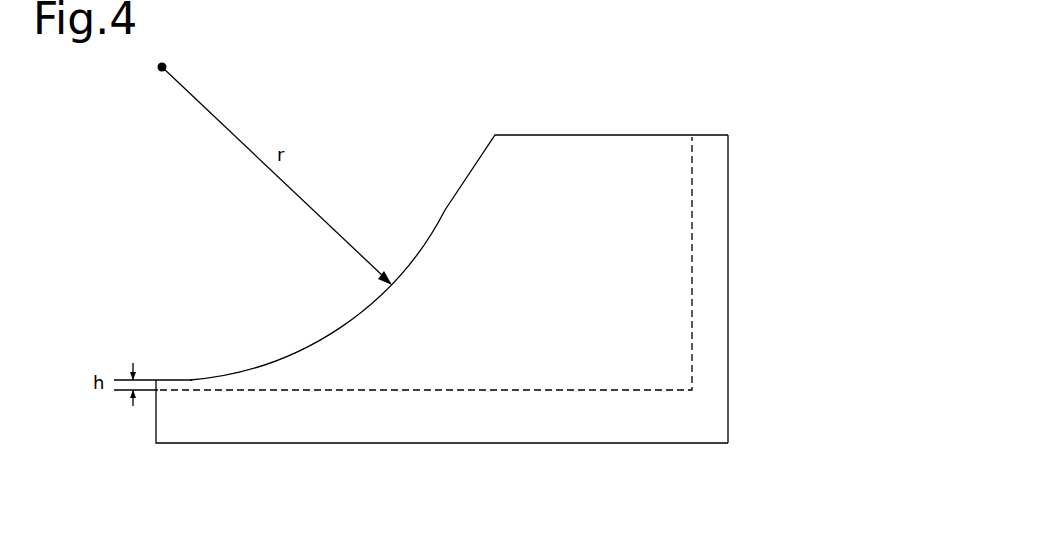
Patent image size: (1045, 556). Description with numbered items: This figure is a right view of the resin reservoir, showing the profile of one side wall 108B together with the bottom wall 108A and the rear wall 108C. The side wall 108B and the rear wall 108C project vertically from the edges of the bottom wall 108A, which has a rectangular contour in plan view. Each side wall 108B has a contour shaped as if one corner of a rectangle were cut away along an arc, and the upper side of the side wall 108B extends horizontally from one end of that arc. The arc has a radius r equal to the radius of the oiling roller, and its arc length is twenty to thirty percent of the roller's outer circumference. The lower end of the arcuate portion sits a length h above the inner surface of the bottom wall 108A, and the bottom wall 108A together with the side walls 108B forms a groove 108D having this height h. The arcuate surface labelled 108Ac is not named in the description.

The bottom wall 108A is at (378, 390).
The side wall 108B is at (614, 222).
The rear wall 108C is at (728, 272).
The groove 108D is at (187, 380).
The curved surface of radius r 108Ac is at (265, 362).